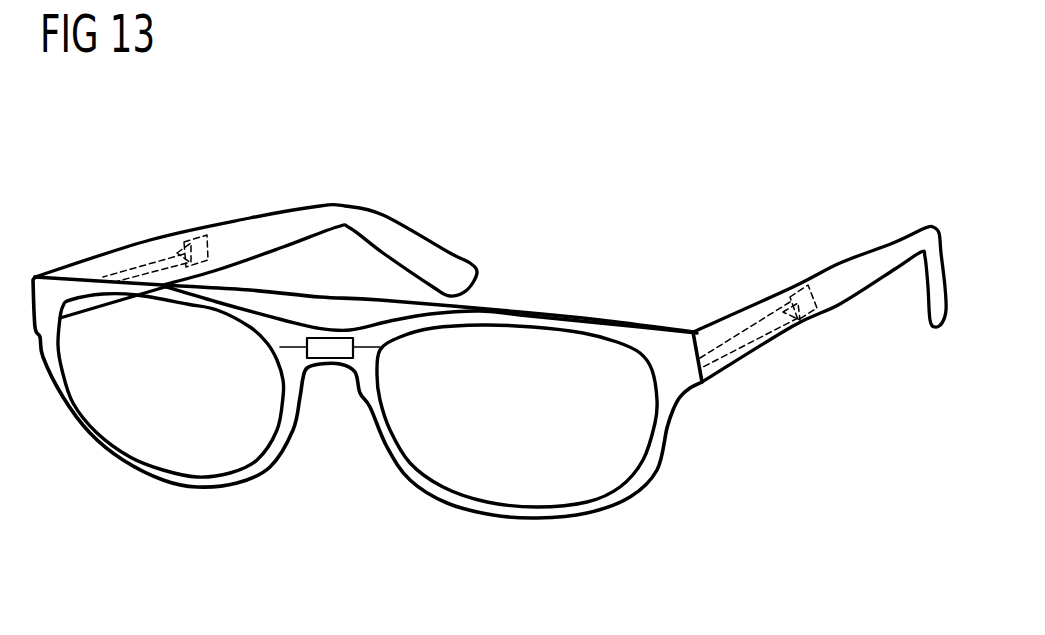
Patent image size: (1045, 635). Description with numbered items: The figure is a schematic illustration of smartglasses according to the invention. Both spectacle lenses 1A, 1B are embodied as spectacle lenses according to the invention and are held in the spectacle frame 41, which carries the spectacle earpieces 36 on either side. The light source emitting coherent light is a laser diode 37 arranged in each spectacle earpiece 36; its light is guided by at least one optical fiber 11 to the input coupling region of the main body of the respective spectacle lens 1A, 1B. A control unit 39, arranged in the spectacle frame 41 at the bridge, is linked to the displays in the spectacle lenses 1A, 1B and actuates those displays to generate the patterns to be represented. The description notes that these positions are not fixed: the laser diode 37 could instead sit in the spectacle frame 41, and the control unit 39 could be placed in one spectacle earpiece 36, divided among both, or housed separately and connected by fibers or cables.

The spectacle lens 1A is at (187, 453).
The spectacle lens 1B is at (525, 480).
The optical fiber 11 is at (728, 350).
The spectacle earpiece 36 is at (250, 227).
The laser diode 37 is at (193, 240).
The control unit 39 is at (332, 343).
The spectacle frame 41 is at (617, 500).